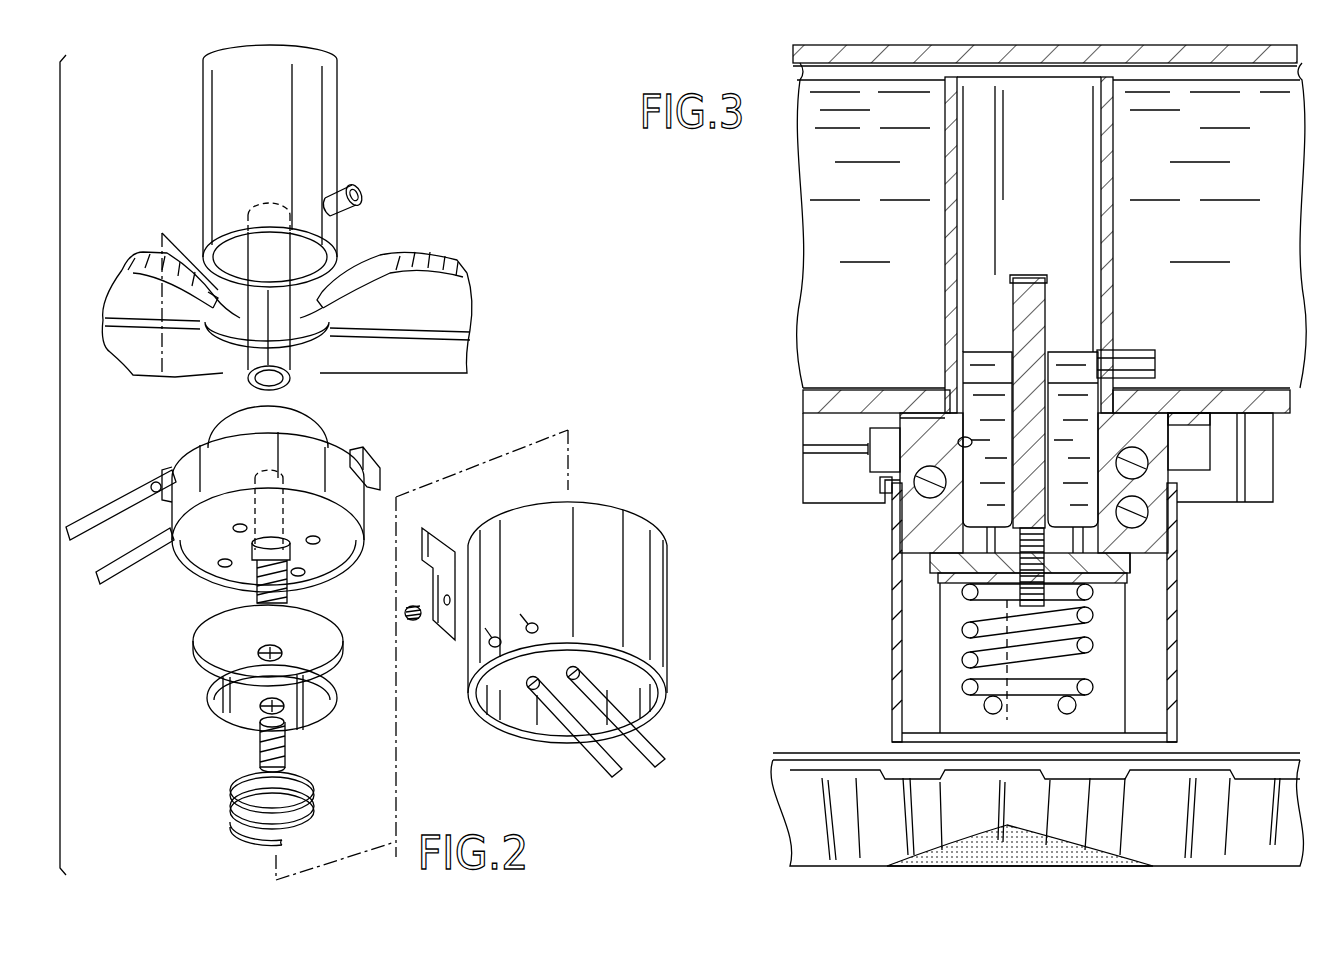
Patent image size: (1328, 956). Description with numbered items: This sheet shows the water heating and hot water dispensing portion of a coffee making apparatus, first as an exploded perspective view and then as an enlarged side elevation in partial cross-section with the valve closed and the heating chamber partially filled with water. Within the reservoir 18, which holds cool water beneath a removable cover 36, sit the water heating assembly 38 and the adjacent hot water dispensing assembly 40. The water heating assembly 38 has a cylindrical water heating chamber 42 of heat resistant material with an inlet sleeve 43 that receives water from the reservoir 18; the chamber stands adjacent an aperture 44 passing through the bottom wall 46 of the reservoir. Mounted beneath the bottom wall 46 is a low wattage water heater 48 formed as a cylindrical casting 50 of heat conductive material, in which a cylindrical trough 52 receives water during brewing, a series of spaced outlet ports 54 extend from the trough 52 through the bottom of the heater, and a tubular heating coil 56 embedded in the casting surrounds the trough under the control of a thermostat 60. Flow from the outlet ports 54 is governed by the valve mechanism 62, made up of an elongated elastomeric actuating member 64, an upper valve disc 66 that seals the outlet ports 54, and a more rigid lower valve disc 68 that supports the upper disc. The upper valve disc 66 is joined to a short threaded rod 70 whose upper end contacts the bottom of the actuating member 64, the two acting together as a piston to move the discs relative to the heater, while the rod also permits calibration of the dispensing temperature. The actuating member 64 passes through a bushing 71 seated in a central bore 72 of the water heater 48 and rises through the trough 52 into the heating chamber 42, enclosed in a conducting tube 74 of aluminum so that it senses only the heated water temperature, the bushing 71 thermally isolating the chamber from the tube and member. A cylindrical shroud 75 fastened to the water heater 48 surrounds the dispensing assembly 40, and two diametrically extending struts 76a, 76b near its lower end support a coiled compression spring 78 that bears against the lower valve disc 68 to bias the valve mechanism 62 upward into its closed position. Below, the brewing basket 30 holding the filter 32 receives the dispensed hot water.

In FIG. 3, the reservoir 18 is at (1195, 128).
In FIG. 3, the brewing basket 30 is at (1270, 752).
In FIG. 3, the filter 32 is at (1172, 792).
In FIG. 3, the removable cover 36 is at (1115, 58).
In FIG. 2, the water heating assembly 38 is at (172, 168).
In FIG. 2, the hot water dispensing assembly 40 is at (462, 508).
In FIG. 2, the water heating chamber 42 is at (333, 266).
In FIG. 3, the water heating chamber 42 is at (955, 153).
In FIG. 2, the inlet sleeve 43 is at (350, 186).
In FIG. 3, the inlet sleeve 43 is at (1140, 352).
In FIG. 2, the aperture 44 is at (333, 323).
In FIG. 2, the bottom wall 46 is at (450, 292).
In FIG. 3, the bottom wall 46 is at (1250, 400).
In FIG. 2, the water heater 48 is at (318, 448).
In FIG. 3, the water heater 48 is at (930, 430).
In FIG. 3, the casting 50 is at (888, 516).
In FIG. 3, the trough 52 is at (880, 455).
In FIG. 2, the outlet ports 54 is at (236, 530).
In FIG. 3, the outlet ports 54 is at (958, 445).
In FIG. 3, the heating coil 56 is at (1170, 478).
In FIG. 3, the thermostat 60 is at (806, 432).
In FIG. 2, the valve mechanism 62 is at (386, 664).
In FIG. 2, the actuating member 64 is at (292, 574).
In FIG. 3, the actuating member 64 is at (1032, 342).
In FIG. 2, the upper valve disc 66 is at (345, 650).
In FIG. 3, the upper valve disc 66 is at (940, 578).
In FIG. 2, the lower valve disc 68 is at (208, 695).
In FIG. 3, the lower valve disc 68 is at (940, 600).
In FIG. 2, the threaded rod 70 is at (262, 746).
In FIG. 3, the threaded rod 70 is at (1048, 580).
In FIG. 2, the bushing 71 is at (292, 557).
In FIG. 3, the bushing 71 is at (1132, 565).
In FIG. 3, the central bore 72 is at (935, 563).
In FIG. 2, the conducting tube 74 is at (262, 345).
In FIG. 3, the conducting tube 74 is at (1007, 292).
In FIG. 2, the shroud 75 is at (598, 505).
In FIG. 3, the shroud 75 is at (893, 722).
In FIG. 2, the strut 76a is at (608, 760).
In FIG. 3, the strut 76a is at (1090, 702).
In FIG. 2, the strut 76b is at (648, 750).
In FIG. 3, the strut 76b is at (1080, 713).
In FIG. 2, the compression spring 78 is at (232, 826).
In FIG. 3, the compression spring 78 is at (972, 640).